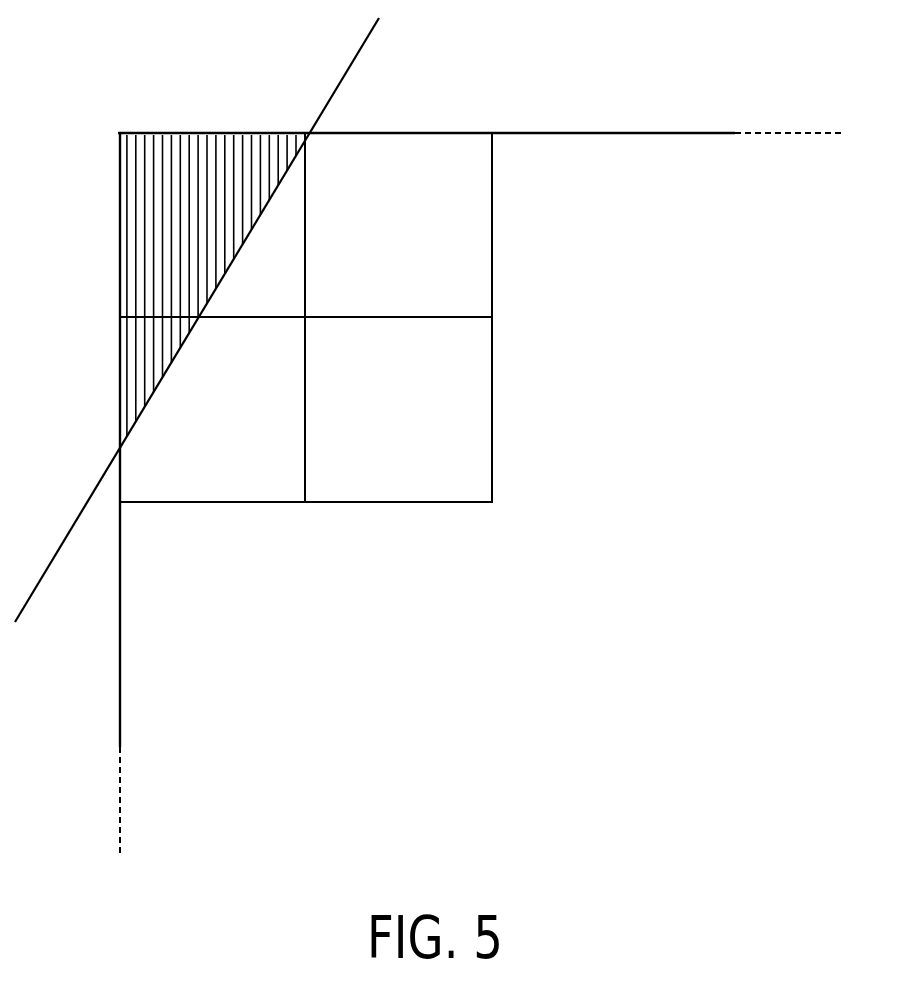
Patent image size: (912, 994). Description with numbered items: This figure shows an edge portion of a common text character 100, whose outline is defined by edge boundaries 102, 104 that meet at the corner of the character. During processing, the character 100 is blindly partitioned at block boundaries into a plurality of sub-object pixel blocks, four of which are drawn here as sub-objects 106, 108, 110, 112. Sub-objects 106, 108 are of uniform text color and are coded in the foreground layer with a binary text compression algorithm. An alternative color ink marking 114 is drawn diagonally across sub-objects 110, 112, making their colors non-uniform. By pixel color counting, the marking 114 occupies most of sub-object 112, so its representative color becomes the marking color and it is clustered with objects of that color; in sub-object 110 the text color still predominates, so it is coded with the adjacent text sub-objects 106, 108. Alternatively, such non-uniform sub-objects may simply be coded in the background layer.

The common character 100 is at (212, 720).
The edge boundary 102 is at (117, 692).
The edge boundary 104 is at (630, 133).
The sub-object 106 is at (478, 230).
The sub-object 108 is at (478, 402).
The sub-object 110 is at (205, 491).
The sub-object 112 is at (292, 257).
The alternative color ink marking 114 is at (212, 150).